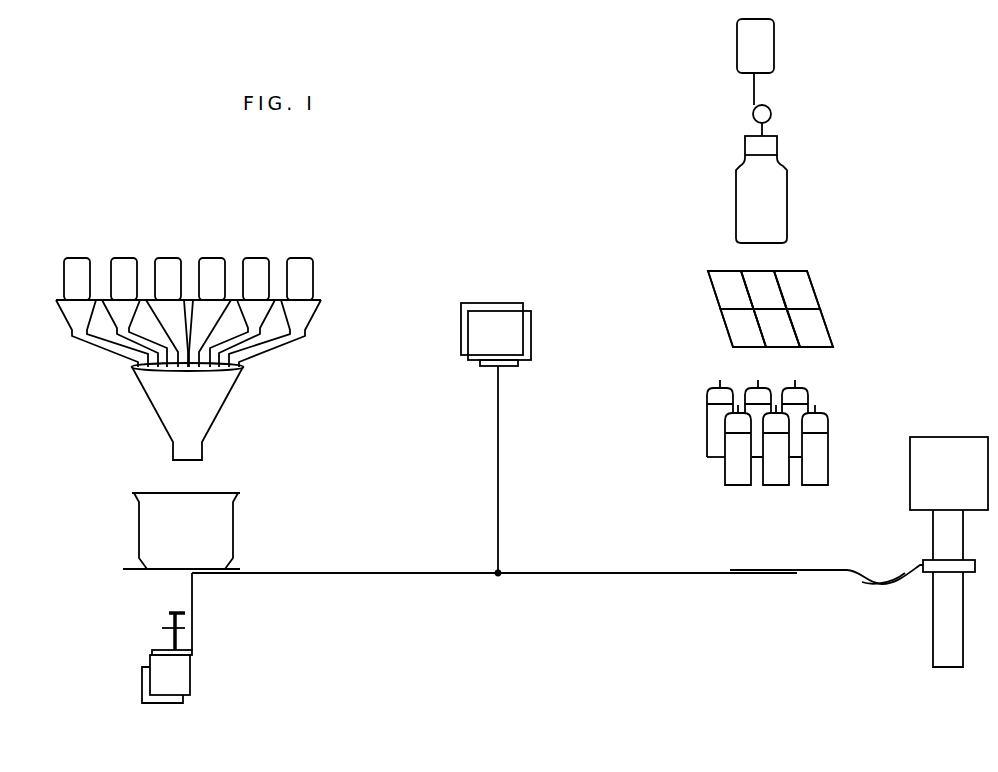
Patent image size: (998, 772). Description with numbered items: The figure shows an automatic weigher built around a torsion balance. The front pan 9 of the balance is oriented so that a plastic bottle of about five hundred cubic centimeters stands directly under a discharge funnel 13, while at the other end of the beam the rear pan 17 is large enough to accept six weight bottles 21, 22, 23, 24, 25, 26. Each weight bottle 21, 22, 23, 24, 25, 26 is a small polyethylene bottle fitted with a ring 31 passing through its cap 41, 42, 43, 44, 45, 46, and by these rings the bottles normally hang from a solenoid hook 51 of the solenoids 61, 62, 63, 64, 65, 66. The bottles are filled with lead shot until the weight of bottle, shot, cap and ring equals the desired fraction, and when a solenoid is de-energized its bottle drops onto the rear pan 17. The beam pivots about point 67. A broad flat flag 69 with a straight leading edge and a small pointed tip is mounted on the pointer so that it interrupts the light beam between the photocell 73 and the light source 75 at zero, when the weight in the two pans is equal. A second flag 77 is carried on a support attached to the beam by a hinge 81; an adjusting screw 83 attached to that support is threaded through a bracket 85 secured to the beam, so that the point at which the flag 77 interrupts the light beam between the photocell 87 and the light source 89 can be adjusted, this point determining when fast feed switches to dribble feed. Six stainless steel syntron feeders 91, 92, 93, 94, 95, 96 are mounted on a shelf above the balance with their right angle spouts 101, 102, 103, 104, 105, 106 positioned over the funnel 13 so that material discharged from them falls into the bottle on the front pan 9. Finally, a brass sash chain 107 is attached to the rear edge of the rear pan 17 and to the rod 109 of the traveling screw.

The front pan 9 is at (142, 571).
The discharge funnel 13 is at (210, 398).
The rear pan 17 is at (822, 575).
The weight bottle 21 is at (787, 220).
The weight bottle 22 is at (757, 458).
The weight bottle 23 is at (795, 458).
The weight bottle 24 is at (738, 485).
The weight bottle 25 is at (778, 485).
The weight bottle 26 is at (821, 483).
The ring 31 is at (771, 114).
The cap 41 is at (777, 148).
The cap 42 is at (765, 397).
The cap 43 is at (808, 400).
The cap 44 is at (738, 445).
The cap 45 is at (776, 445).
The cap 46 is at (815, 445).
The solenoid hook 51 is at (755, 97).
The solenoid 61 is at (768, 32).
The solenoid 62 is at (764, 290).
The solenoid 63 is at (797, 290).
The solenoid 64 is at (744, 328).
The solenoid 65 is at (777, 328).
The solenoid 66 is at (810, 328).
The pivot point 67 is at (610, 577).
The flag 69 is at (518, 364).
The photocell 73 is at (531, 311).
The light source 75 is at (508, 303).
The second flag 77 is at (193, 653).
The hinge 81 is at (196, 577).
The adjusting screw 83 is at (175, 612).
The bracket 85 is at (170, 628).
The photocell 87 is at (191, 690).
The light source 89 is at (165, 704).
The feeder 91 is at (76, 259).
The feeder 92 is at (123, 259).
The feeder 93 is at (167, 259).
The feeder 94 is at (211, 259).
The feeder 95 is at (255, 259).
The feeder 96 is at (299, 259).
The right angle spout 101 is at (98, 339).
The right angle spout 102 is at (137, 305).
The right angle spout 103 is at (182, 305).
The right angle spout 104 is at (226, 307).
The right angle spout 105 is at (273, 307).
The right angle spout 106 is at (315, 312).
The brass sash chain 107 is at (881, 597).
The rod 109 is at (935, 538).